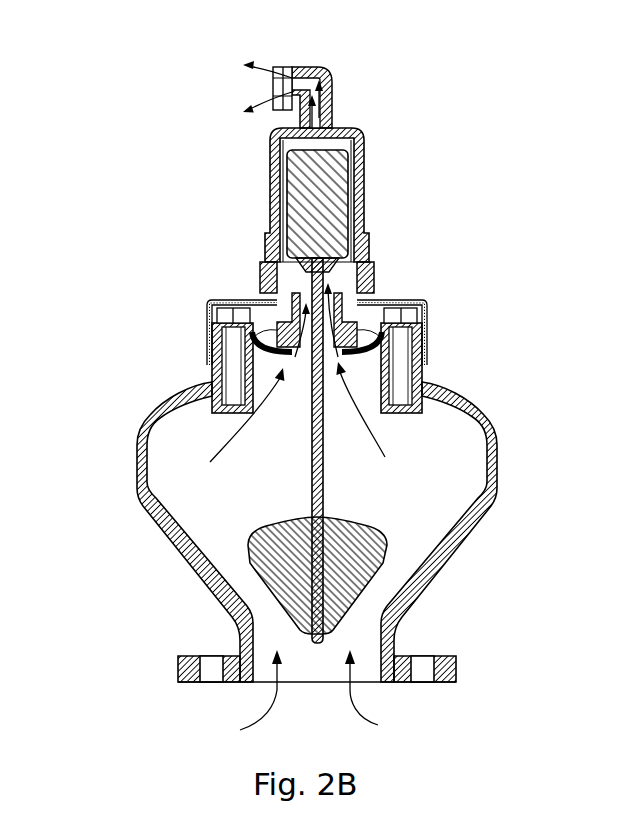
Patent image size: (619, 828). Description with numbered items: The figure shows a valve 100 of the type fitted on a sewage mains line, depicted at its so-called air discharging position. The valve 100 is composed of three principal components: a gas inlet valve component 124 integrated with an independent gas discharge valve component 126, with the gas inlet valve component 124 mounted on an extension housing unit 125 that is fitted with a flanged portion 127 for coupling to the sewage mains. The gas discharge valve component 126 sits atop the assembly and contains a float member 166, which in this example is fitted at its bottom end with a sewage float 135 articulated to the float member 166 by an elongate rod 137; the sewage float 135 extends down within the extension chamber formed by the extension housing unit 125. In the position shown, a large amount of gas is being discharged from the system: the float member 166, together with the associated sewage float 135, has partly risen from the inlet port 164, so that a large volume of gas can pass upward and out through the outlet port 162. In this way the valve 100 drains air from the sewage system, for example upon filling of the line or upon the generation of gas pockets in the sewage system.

The valve 100 is at (490, 155).
The gas inlet valve component 124 is at (438, 318).
The extension housing unit 125 is at (140, 488).
The gas discharge valve component 126 is at (258, 183).
The flanged portion 127 is at (453, 658).
The sewage float 135 is at (387, 563).
The elongate rod 137 is at (324, 498).
The outlet port 162 is at (318, 128).
The inlet port 164 is at (257, 262).
The float member 166 is at (332, 205).